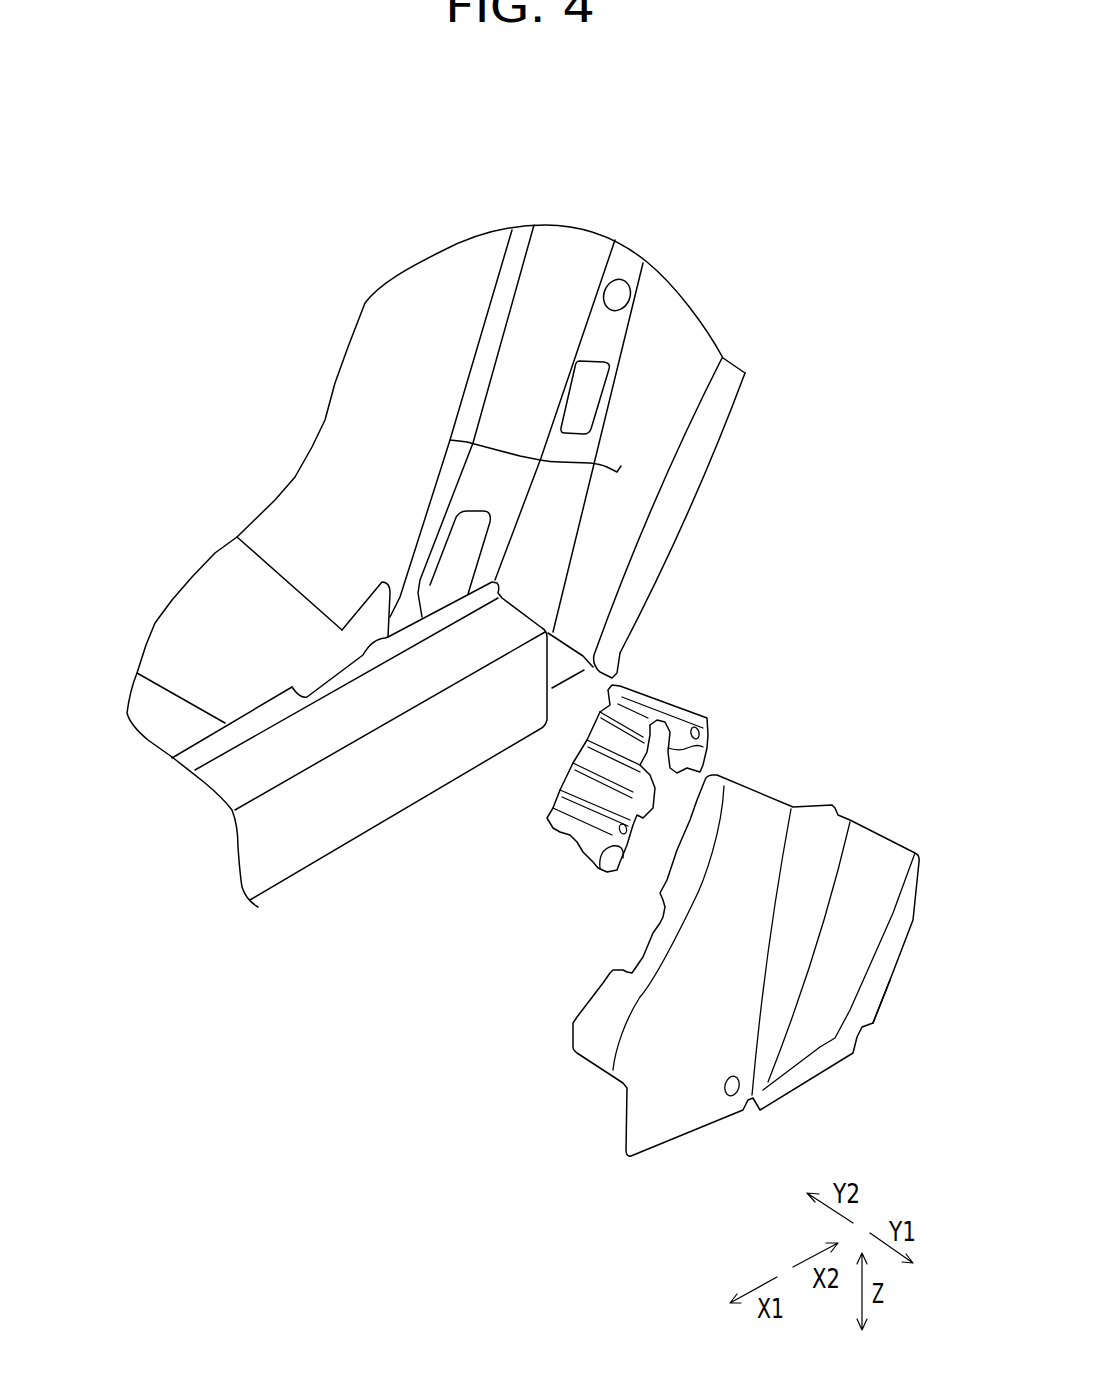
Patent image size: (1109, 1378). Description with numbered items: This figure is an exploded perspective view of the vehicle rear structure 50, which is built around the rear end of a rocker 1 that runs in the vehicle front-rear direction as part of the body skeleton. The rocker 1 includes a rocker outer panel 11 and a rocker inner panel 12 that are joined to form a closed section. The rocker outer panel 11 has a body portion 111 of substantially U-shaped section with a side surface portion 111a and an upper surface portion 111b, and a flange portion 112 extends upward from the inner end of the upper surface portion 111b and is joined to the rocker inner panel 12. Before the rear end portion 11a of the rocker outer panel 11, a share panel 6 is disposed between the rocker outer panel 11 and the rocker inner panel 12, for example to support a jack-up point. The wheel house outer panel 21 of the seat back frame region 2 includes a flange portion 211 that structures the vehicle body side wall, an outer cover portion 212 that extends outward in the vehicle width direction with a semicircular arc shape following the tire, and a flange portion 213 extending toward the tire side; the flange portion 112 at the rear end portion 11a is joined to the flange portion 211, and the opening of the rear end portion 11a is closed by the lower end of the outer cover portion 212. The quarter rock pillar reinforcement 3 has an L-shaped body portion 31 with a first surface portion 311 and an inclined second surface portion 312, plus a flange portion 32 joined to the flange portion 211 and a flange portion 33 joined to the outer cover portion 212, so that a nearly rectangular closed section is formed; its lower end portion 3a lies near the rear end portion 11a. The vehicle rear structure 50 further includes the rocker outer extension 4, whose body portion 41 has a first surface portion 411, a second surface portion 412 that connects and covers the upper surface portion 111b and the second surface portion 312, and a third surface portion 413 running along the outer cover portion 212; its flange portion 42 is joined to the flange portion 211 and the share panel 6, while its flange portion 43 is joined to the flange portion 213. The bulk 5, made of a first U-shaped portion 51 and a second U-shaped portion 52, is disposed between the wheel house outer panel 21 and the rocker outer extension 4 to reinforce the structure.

The rocker 1 is at (327, 872).
The rocker outer panel 11 is at (373, 813).
The body portion 111 is at (185, 914).
The side surface portion 111a is at (270, 847).
The upper surface portion 111b is at (222, 792).
The flange portion 112 is at (195, 758).
The rear end portion 11a is at (535, 693).
The rocker inner panel 12 is at (252, 718).
The seat back frame 2 is at (744, 408).
The wheel house outer panel 21 is at (670, 423).
The flange portion 211 is at (530, 458).
The outer cover portion 212 is at (627, 517).
The flange portion 213 is at (677, 477).
The quarter rock pillar reinforcement 3 is at (553, 243).
The lower end portion 3a is at (508, 432).
The body portion 31 is at (677, 172).
The first surface portion 311 is at (627, 267).
The second surface portion 312 is at (577, 250).
The flange portion 32 is at (508, 273).
The flange portion 33 is at (645, 292).
The share panel 6 is at (368, 597).
The vehicle rear structure 50 is at (689, 611).
The bulk 5 is at (712, 728).
The first U-shaped portion 51 is at (687, 723).
The second U-shaped portion 52 is at (600, 868).
The rocker outer extension 4 is at (669, 1122).
The body portion 41 is at (923, 769).
The first surface portion 411 is at (815, 829).
The second surface portion 412 is at (763, 810).
The third surface portion 413 is at (873, 857).
The flange portion 42 is at (592, 1017).
The flange portion 43 is at (880, 955).